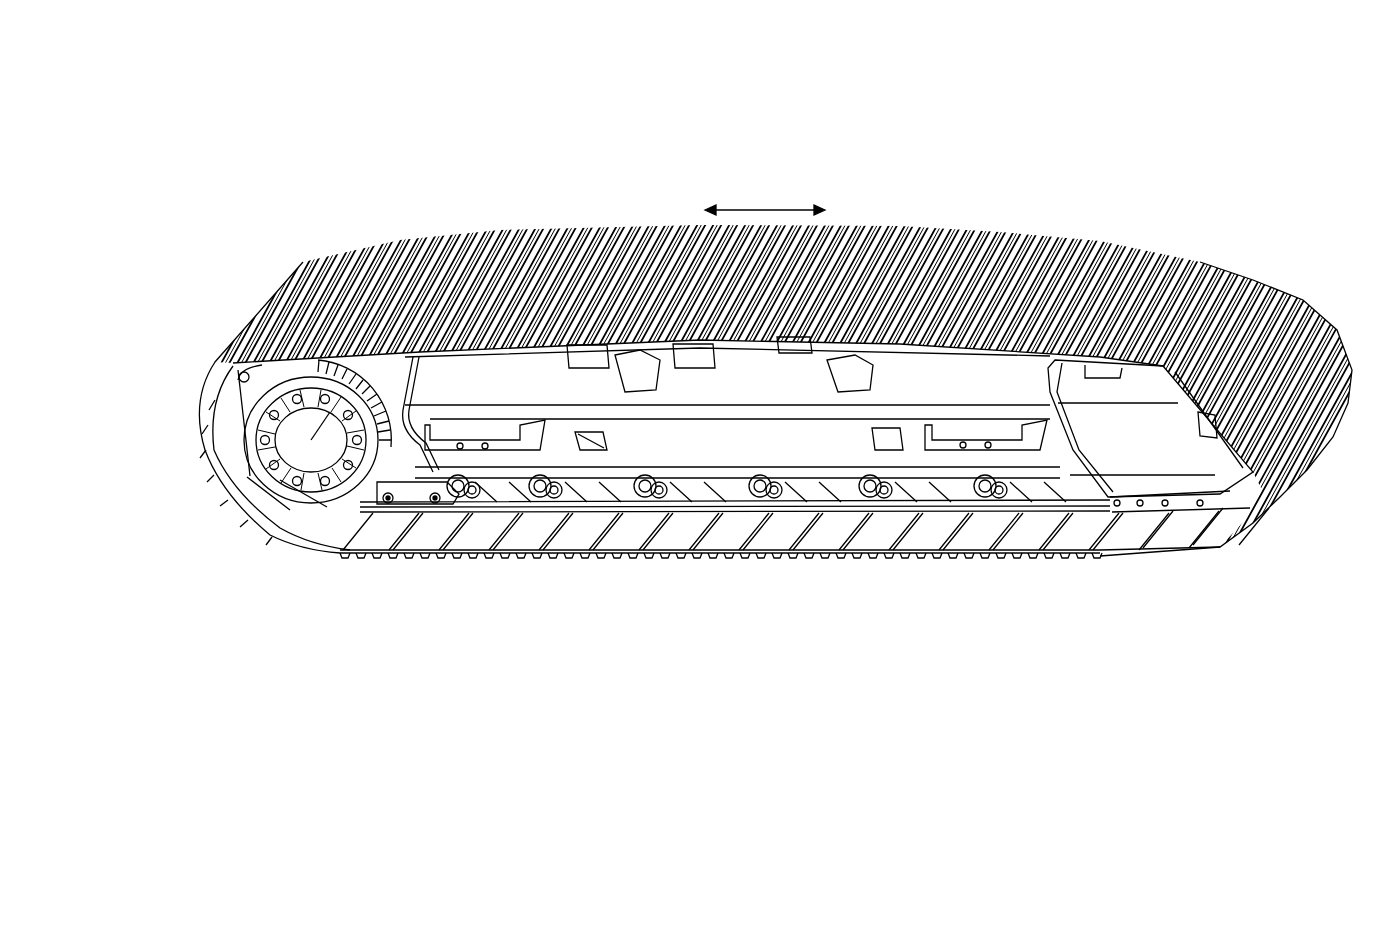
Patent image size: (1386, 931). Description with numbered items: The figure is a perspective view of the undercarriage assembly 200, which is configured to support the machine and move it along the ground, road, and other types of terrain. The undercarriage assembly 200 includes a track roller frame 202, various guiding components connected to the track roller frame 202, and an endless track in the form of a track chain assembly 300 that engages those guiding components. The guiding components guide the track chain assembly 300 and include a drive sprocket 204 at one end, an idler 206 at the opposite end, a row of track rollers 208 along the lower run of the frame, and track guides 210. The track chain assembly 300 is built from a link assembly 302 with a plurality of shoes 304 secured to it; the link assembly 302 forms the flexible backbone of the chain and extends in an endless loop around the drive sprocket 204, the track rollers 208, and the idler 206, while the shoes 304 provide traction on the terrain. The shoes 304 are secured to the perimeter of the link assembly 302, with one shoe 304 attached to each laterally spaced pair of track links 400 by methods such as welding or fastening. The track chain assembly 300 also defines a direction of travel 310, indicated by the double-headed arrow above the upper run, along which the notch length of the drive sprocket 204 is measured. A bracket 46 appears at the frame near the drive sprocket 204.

The undercarriage assembly 200 is at (1193, 104).
The track roller frame 202 is at (733, 445).
The drive sprocket 204 is at (262, 364).
The idler 206 is at (1227, 458).
The track rollers 208 is at (461, 492).
The track guides 210 is at (593, 494).
The track chain assembly 300 is at (1080, 522).
The link assembly 302 is at (368, 492).
The shoes 304 is at (216, 410).
The direction of travel 310 is at (762, 205).
The track links 400 is at (410, 505).
The bracket 46 is at (448, 484).